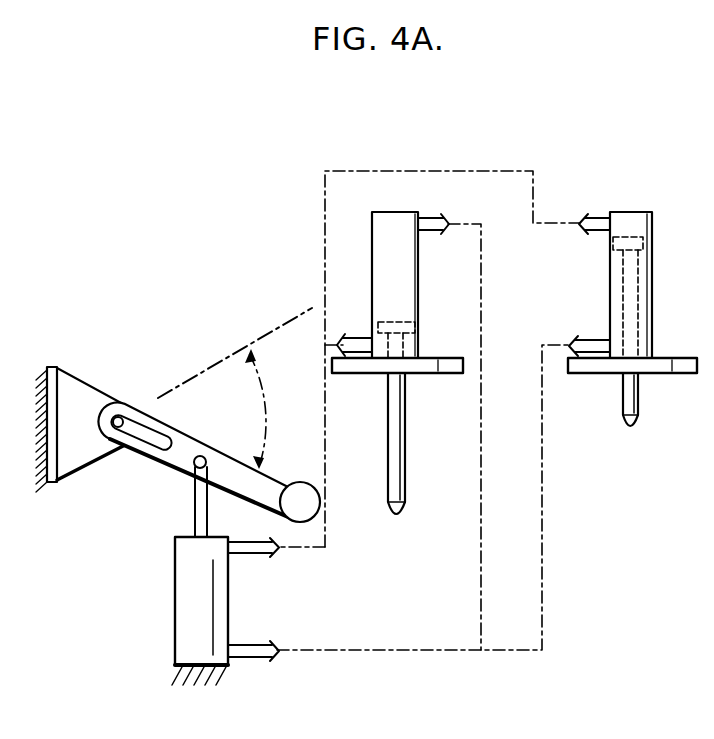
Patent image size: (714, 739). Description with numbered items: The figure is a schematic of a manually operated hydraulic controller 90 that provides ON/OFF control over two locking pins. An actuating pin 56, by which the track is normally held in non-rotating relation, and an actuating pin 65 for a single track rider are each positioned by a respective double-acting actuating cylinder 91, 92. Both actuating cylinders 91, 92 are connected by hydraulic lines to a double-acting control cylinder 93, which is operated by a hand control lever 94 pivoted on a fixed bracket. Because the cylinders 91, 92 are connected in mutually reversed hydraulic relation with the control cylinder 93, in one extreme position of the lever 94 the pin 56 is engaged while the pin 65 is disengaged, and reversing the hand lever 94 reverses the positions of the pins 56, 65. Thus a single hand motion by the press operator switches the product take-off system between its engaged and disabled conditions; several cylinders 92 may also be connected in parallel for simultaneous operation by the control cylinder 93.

The manually operated hydraulic controller 90 is at (198, 340).
The double-acting actuating cylinder 91 is at (412, 381).
The double-acting actuating cylinder 92 is at (613, 377).
The control cylinder 93 is at (165, 615).
The hand control lever 94 is at (229, 472).
The actuating pin 56 is at (405, 477).
The actuating pin 65 is at (638, 417).